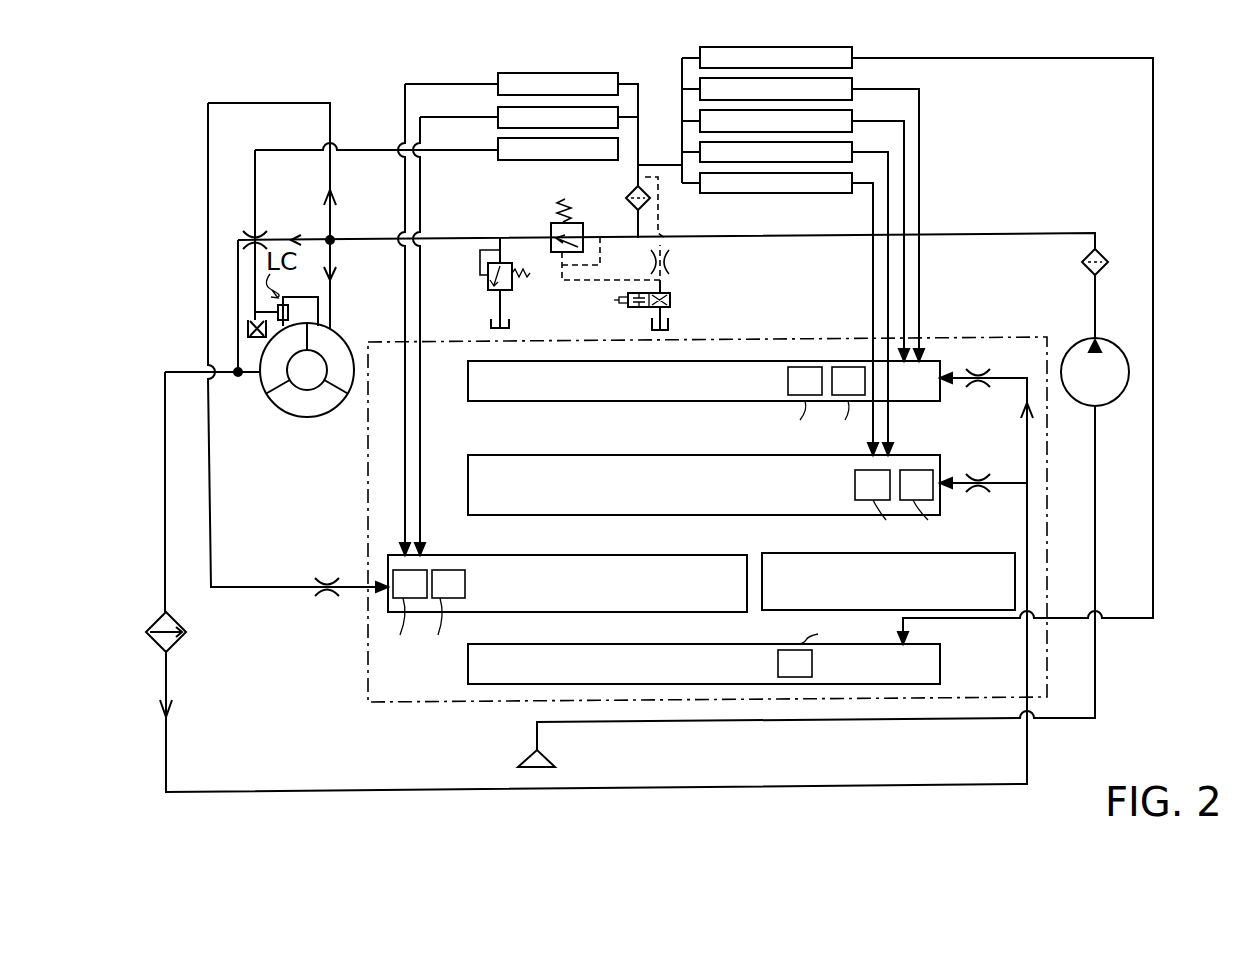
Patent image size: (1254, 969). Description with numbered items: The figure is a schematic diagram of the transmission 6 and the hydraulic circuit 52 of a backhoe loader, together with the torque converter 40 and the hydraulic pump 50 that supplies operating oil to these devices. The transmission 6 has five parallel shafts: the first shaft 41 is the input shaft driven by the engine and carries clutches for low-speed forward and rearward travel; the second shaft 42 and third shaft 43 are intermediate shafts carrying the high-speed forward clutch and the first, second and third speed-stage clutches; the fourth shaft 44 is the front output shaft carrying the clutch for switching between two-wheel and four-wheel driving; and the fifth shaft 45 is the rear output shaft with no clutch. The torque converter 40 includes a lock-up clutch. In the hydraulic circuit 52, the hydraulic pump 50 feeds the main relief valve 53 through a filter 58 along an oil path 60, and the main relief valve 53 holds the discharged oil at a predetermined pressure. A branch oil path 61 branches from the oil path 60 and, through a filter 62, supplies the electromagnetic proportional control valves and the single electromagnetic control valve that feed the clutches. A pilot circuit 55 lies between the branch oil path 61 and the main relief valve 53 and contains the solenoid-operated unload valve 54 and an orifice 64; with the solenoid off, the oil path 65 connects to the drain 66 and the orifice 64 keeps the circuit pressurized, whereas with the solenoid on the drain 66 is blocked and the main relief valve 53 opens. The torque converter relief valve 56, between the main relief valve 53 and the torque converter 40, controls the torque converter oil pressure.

The transmission 6 is at (368, 683).
The torque converter 40 is at (266, 422).
The first shaft 41 is at (468, 392).
The second shaft 42 is at (468, 488).
The third shaft 43 is at (560, 555).
The fourth shaft 44 is at (580, 644).
The fifth shaft 45 is at (862, 553).
The hydraulic pump 50 is at (1117, 404).
The hydraulic circuit 52 is at (988, 203).
The main relief valve 53 is at (560, 206).
The unload valve 54 is at (704, 304).
The pilot circuit 55 is at (673, 242).
The torque converter relief valve 56 is at (485, 300).
The filter 58 is at (1100, 253).
The oil path 60 is at (972, 238).
The branch oil path 61 is at (638, 223).
The filter 62 is at (628, 190).
The orifice 64 is at (667, 262).
The oil path 65 is at (662, 210).
The drain 66 is at (670, 323).